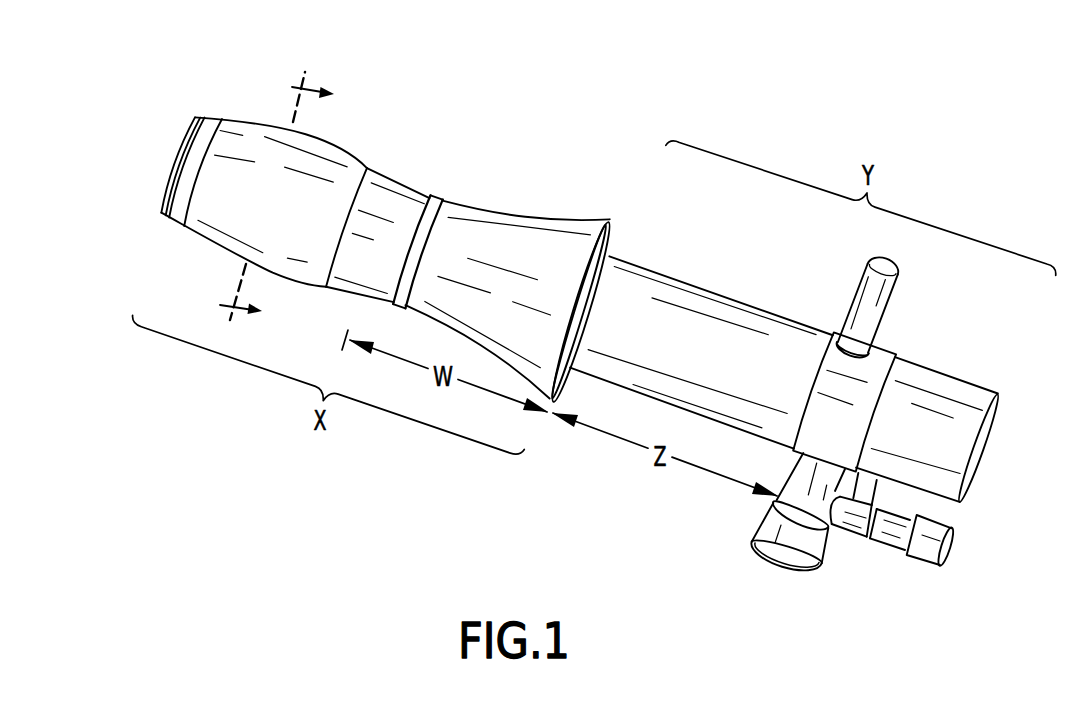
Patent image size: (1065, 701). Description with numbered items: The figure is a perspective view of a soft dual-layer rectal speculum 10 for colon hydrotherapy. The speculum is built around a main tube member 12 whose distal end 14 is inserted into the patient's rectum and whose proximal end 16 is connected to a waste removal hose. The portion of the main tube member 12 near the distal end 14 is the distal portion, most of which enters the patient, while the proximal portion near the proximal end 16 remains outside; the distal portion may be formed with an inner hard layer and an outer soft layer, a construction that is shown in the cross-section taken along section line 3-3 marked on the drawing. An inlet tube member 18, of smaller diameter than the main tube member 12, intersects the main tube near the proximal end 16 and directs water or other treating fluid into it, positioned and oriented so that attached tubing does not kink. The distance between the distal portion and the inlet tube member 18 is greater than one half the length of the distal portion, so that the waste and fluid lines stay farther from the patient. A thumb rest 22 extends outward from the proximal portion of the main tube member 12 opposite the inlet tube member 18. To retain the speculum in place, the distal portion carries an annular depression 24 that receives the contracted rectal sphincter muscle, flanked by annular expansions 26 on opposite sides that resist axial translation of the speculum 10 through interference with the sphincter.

The rectal speculum 10 is at (668, 66).
The main tube member 12 is at (520, 200).
The distal end 14 is at (192, 117).
The proximal end 16 is at (997, 392).
The inlet tube member 18 is at (927, 559).
The thumb rest 22 is at (888, 294).
The annular depression 24 is at (441, 199).
The annular expansions 26 is at (333, 143).
The section line 3- 3 is at (277, 196).